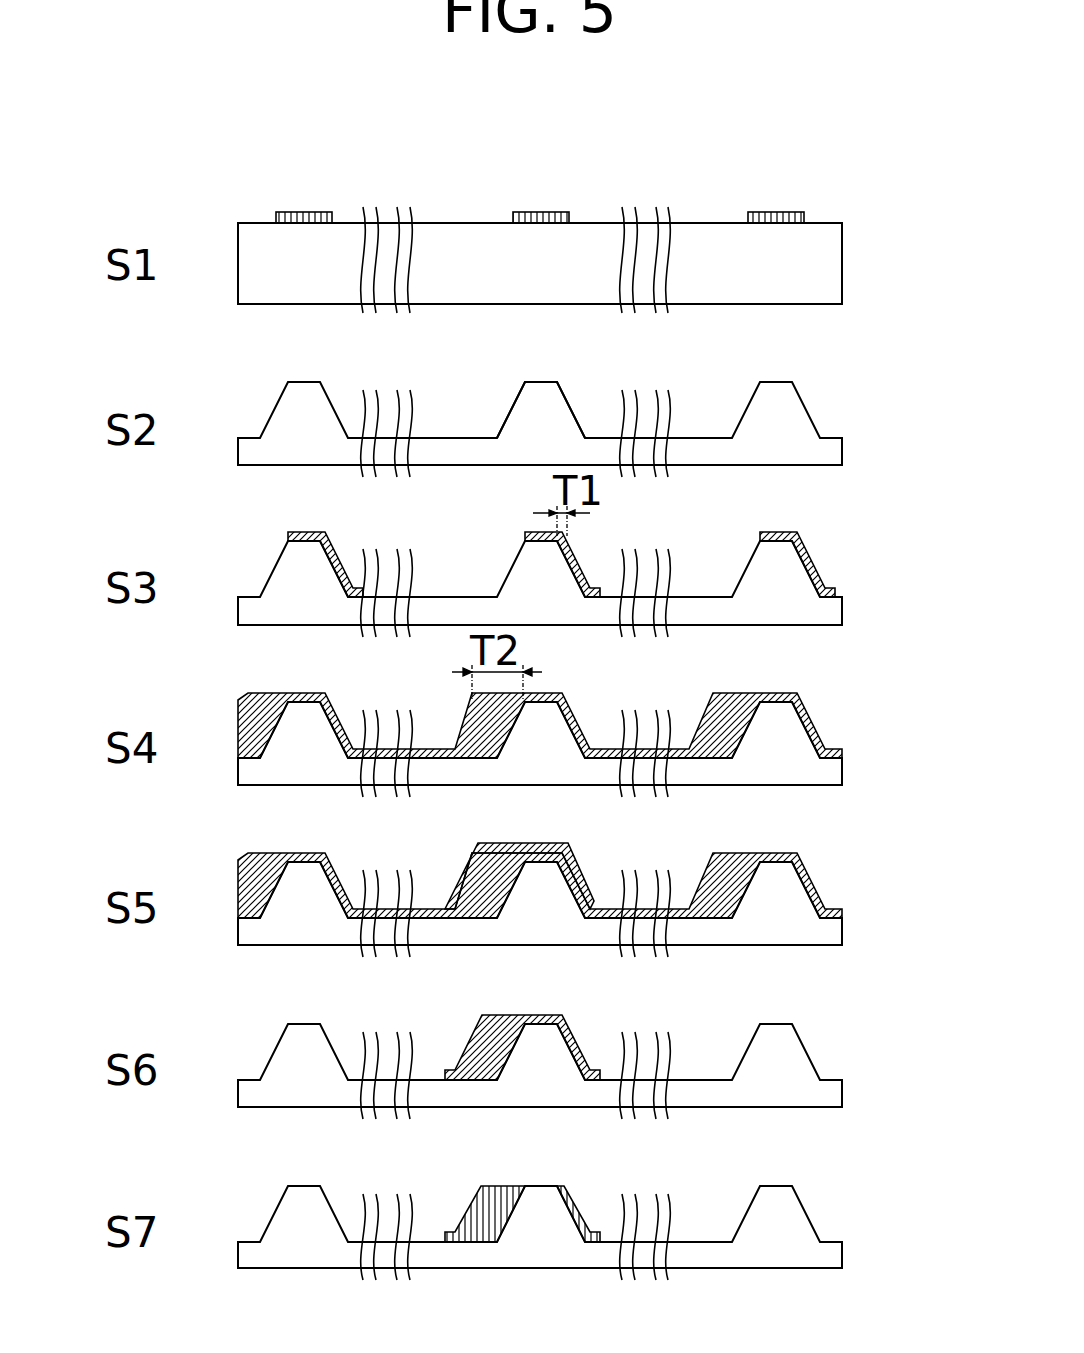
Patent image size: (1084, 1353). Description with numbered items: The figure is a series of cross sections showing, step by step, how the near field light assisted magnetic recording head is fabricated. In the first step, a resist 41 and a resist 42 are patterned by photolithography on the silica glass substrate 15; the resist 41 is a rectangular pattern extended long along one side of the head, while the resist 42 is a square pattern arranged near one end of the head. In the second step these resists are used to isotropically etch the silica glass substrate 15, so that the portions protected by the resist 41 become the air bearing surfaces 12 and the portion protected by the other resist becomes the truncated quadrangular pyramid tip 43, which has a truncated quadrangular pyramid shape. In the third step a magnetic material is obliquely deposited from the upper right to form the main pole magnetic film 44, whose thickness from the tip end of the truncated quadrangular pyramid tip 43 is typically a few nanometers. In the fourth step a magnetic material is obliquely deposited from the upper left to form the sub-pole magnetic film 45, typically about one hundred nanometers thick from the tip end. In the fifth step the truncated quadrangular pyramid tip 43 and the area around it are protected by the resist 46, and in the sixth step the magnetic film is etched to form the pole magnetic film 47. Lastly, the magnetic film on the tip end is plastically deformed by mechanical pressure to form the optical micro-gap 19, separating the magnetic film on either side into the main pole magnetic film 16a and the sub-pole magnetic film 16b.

The silica glass substrate 15 is at (278, 250).
The resist 41 is at (307, 213).
The resist 42 is at (542, 213).
The air bearing surface 12 is at (300, 415).
The truncated quadrangular pyramid tip 43 is at (522, 402).
The main pole magnetic film 44 is at (338, 560).
The sub-pole magnetic film 45 is at (260, 720).
The resist 46 is at (480, 850).
The pole magnetic film 47 is at (488, 1034).
The sub-pole magnetic film 16b is at (492, 1200).
The optical micro-gap 19 is at (535, 1192).
The main pole magnetic film 16a is at (571, 1203).